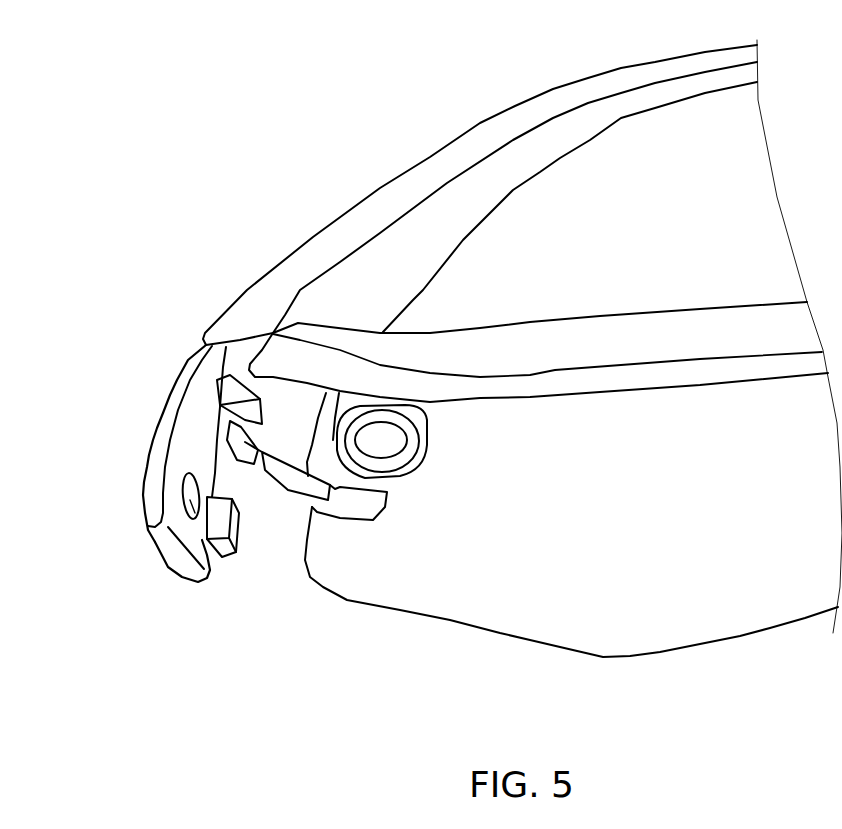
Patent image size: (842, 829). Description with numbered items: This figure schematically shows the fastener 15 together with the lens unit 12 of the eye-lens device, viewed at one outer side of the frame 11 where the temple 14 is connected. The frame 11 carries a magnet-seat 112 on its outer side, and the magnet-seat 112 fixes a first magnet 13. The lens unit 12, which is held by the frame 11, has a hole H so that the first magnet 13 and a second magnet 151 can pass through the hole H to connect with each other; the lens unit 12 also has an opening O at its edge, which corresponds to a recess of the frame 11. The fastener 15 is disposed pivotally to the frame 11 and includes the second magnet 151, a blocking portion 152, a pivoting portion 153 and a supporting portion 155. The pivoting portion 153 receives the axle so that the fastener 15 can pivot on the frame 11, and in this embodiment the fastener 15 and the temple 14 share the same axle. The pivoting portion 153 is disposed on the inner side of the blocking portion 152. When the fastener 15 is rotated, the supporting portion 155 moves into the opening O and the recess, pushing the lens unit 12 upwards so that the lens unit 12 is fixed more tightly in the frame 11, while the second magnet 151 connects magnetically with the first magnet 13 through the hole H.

The frame 11 is at (547, 280).
The lens unit 12 is at (573, 394).
The first magnet 13 is at (382, 542).
The temple 14 is at (523, 108).
The fastener 15 is at (149, 443).
The magnet-seat 112 is at (352, 303).
The second magnet 151 is at (144, 565).
The blocking portion 152 is at (121, 483).
The pivoting portion 153 is at (160, 398).
The supporting portion 155 is at (224, 586).
The hole H is at (263, 326).
The opening O is at (316, 553).